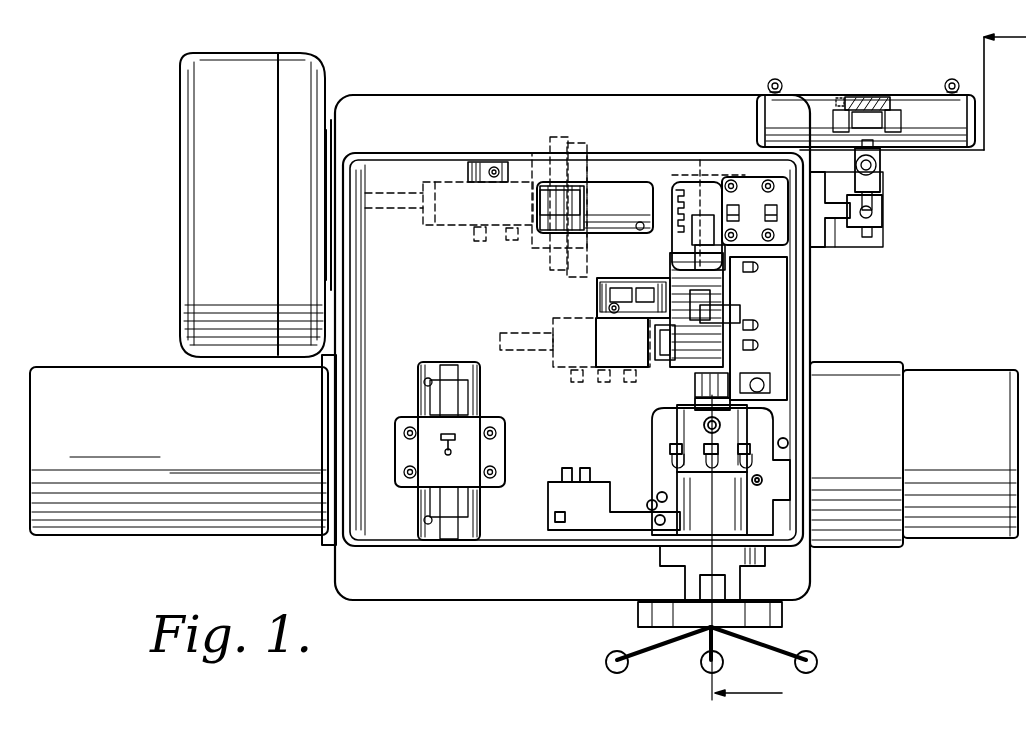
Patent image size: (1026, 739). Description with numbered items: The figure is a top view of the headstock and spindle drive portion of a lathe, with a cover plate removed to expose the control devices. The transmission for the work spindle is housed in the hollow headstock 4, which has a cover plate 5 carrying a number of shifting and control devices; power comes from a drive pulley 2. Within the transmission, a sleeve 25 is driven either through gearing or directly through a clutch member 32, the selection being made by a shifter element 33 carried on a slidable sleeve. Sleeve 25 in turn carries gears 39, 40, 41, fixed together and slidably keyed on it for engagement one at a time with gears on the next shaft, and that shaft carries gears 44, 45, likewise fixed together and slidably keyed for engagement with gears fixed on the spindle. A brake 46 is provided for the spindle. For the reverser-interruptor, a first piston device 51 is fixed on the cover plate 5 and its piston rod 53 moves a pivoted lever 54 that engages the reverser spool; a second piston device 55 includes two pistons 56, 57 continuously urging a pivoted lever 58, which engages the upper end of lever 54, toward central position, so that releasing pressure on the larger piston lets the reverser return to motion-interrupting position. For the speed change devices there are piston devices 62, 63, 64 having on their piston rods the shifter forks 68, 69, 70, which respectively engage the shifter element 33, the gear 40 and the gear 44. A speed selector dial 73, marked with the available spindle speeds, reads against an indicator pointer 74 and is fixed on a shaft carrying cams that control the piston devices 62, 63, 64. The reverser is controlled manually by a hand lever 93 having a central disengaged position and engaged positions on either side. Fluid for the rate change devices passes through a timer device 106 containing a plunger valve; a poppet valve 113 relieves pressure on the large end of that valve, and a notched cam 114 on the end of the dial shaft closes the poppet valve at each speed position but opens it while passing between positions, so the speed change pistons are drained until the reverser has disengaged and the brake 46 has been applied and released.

The drive pulley 2 is at (756, 695).
The headstock 4 is at (527, 113).
The cover plate 5 is at (445, 157).
The sleeve 25 is at (610, 190).
The clutch member 32 is at (680, 190).
The shifter element 33 is at (700, 160).
The gear 39 is at (540, 165).
The gear 40 is at (558, 140).
The gear 41 is at (578, 160).
The gear 44 is at (680, 300).
The gear 45 is at (710, 318).
The brake 46 is at (452, 405).
The first piston device 51 is at (750, 200).
The piston rod 53 is at (838, 247).
The pivoted lever 54 is at (882, 222).
The second piston device 55 is at (918, 97).
The piston 56 is at (845, 110).
The piston 57 is at (882, 112).
The pivoted lever 58 is at (880, 180).
The piston device 62 is at (668, 250).
The piston device 63 is at (484, 228).
The piston device 64 is at (650, 345).
The shifter fork 68 is at (680, 270).
The shifter fork 69 is at (560, 210).
The shifter fork 70 is at (675, 337).
The speed selector dial 73 is at (695, 627).
The indicator pointer 74 is at (714, 612).
The hand lever 93 is at (702, 672).
The timer device 106 is at (775, 330).
The poppet valve 113 is at (735, 385).
The notched cam 114 is at (695, 390).